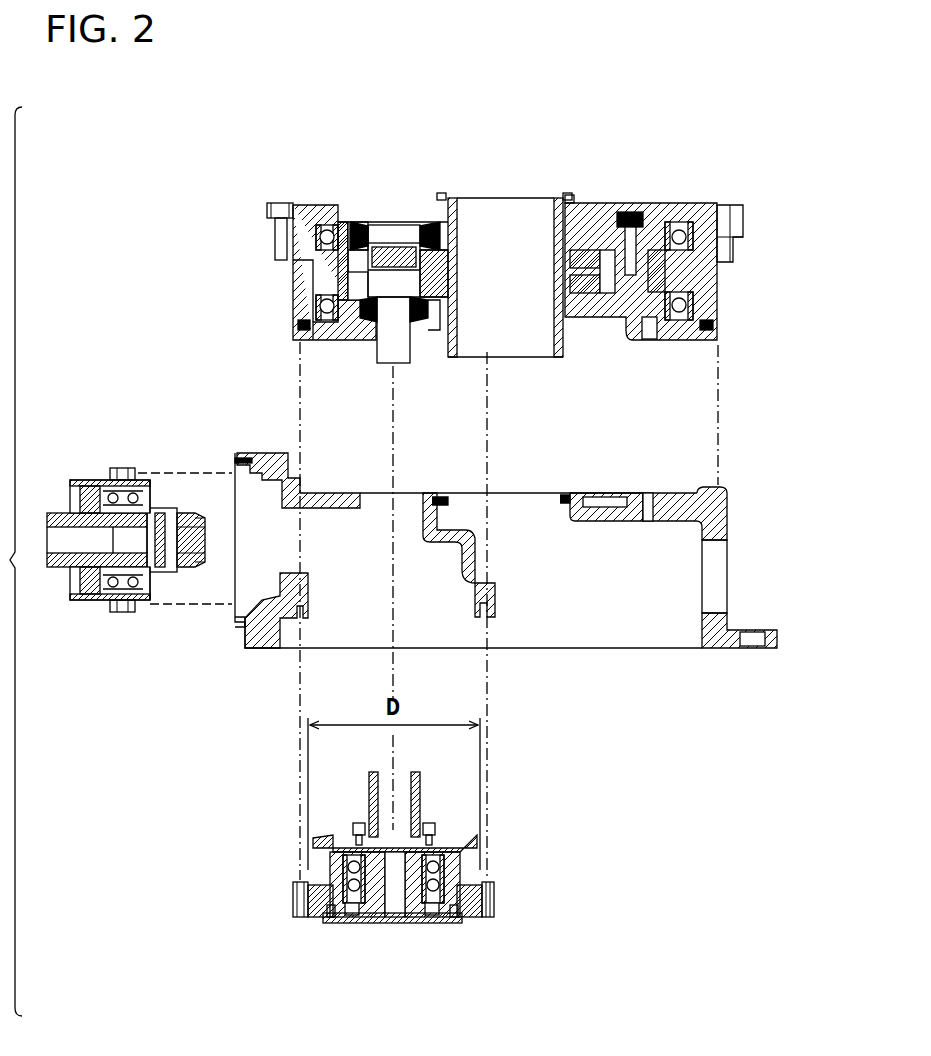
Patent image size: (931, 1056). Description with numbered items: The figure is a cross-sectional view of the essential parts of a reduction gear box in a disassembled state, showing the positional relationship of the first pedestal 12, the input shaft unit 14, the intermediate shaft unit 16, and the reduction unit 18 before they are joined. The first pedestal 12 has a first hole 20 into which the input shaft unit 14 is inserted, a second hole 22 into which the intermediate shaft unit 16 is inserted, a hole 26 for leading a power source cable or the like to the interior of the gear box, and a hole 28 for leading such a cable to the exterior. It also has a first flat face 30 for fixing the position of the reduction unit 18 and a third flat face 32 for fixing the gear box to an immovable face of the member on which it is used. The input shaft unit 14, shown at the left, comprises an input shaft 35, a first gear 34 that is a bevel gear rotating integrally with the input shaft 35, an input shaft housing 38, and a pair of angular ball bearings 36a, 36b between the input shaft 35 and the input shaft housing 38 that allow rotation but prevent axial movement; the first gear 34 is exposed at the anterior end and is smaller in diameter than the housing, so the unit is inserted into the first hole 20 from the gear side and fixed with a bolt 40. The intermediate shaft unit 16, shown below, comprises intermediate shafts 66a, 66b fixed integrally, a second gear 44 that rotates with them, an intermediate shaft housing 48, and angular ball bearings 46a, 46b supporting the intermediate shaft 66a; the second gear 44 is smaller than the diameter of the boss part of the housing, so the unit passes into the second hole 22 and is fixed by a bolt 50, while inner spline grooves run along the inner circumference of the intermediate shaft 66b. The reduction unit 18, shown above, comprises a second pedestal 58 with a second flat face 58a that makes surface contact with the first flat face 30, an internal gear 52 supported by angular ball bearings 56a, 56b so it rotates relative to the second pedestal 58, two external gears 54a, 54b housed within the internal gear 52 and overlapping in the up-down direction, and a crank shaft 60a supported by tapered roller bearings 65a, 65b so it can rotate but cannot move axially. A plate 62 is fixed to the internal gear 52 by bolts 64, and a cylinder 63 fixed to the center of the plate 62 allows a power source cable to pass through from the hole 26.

The first pedestal 12 is at (270, 462).
The input shaft unit 14 is at (135, 450).
The intermediate shaft unit 16 is at (390, 943).
The reduction unit 18 is at (752, 220).
The first hole 20 is at (290, 520).
The second hole 22 is at (333, 620).
The hole 26 is at (722, 577).
The hole 28 is at (528, 503).
The first flat face 30 is at (588, 492).
The third flat face 32 is at (718, 650).
The first gear 34 is at (192, 518).
The input shaft 35 is at (62, 568).
The angular ball bearing 36a is at (110, 602).
The angular ball bearing 36b is at (140, 602).
The input shaft housing 38 is at (120, 612).
The bolt 40 is at (108, 473).
The second gear 44 is at (455, 845).
The angular ball bearing 46a is at (450, 868).
The angular ball bearing 46b is at (465, 915).
The intermediate shaft housing 48 is at (495, 897).
The bolt 50 is at (493, 892).
The internal gear 52 is at (300, 270).
The external gear 54a is at (345, 262).
The external gear 54b is at (300, 290).
The angular ball bearing 56a is at (330, 237).
The angular ball bearing 56b is at (328, 320).
The second pedestal 58 is at (612, 260).
The second flat face 58a is at (652, 340).
The crank shaft 60a is at (393, 237).
The plate 62 is at (718, 215).
The cylinder 63 is at (455, 255).
The bolt 64 is at (283, 207).
The tapered roller bearing 65a is at (425, 240).
The tapered roller bearing 65b is at (418, 318).
The intermediate shaft 66a is at (413, 918).
The intermediate shaft 66b is at (420, 790).